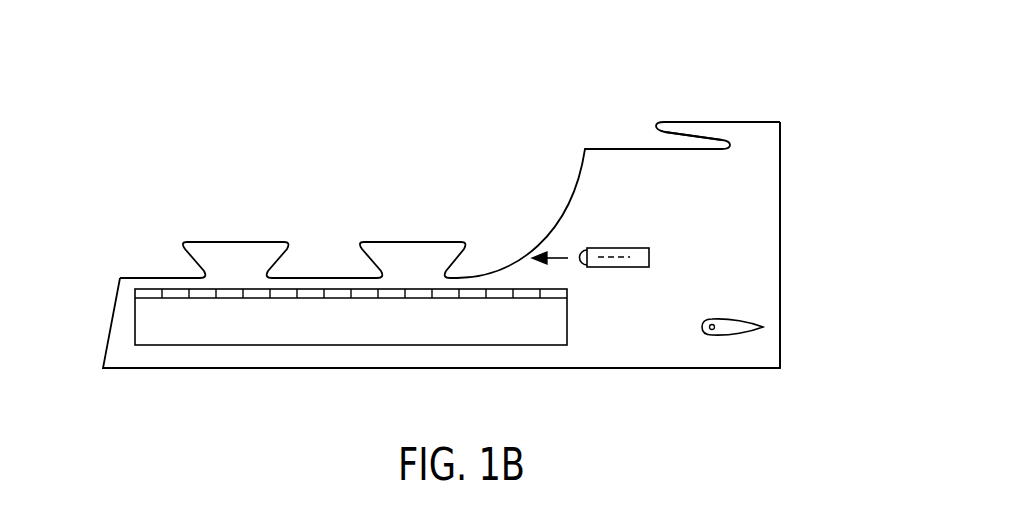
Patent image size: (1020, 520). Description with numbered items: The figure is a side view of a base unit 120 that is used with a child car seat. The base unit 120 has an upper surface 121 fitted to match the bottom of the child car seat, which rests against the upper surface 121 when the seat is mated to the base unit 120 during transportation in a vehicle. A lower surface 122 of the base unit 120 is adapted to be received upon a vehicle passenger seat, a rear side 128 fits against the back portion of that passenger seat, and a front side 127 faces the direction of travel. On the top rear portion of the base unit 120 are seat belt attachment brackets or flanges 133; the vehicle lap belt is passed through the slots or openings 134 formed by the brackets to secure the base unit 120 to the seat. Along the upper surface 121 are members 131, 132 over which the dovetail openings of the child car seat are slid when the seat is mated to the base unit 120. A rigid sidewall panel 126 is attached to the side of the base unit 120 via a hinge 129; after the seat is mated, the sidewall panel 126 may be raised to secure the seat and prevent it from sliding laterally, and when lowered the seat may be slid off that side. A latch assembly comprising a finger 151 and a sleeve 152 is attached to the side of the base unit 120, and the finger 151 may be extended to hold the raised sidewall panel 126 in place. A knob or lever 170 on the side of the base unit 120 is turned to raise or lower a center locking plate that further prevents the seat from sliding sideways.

The base unit 120 is at (648, 77).
The upper surface 121 is at (148, 277).
The lower surface 122 is at (543, 368).
The sidewall panel 126 is at (567, 320).
The front side 127 is at (105, 335).
The rear side 128 is at (780, 233).
The hinge 129 is at (567, 293).
The member 131 is at (238, 255).
The member 132 is at (413, 255).
The seat belt attachment bracket 133 is at (700, 122).
The slot 134 is at (660, 142).
The finger 151 is at (583, 250).
The sleeve 152 is at (652, 255).
The lever 170 is at (730, 333).